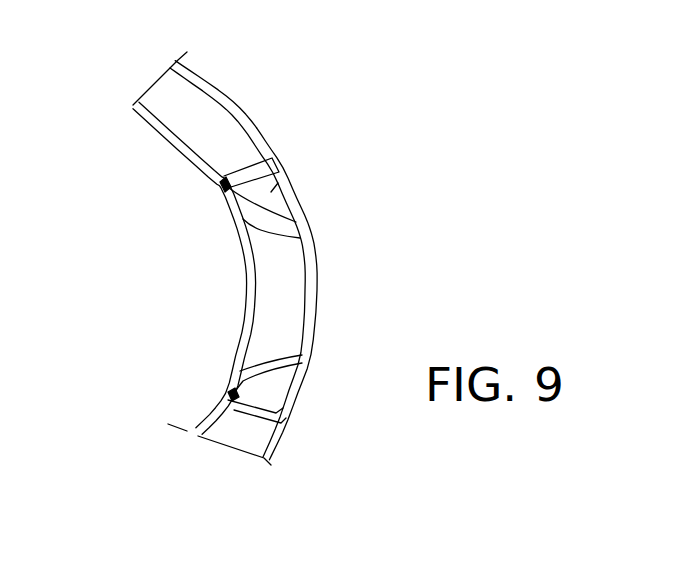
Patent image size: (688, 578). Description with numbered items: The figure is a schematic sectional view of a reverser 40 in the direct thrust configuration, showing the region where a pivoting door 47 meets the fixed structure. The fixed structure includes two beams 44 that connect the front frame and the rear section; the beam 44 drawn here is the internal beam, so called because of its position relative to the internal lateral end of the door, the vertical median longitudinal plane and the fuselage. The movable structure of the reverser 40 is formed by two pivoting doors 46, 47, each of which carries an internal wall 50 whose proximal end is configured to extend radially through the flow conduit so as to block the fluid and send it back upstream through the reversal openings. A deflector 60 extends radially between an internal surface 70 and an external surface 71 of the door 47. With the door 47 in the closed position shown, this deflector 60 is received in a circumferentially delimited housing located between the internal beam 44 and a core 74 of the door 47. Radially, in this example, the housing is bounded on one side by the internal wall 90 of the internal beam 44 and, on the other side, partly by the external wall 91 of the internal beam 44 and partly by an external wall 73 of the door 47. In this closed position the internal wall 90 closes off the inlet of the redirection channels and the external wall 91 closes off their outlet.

The reverser 40 is at (118, 295).
The beam 44 is at (334, 297).
The pivoting door 46 is at (292, 456).
The pivoting door 47 is at (237, 73).
The internal wall 50 is at (142, 119).
The deflector 60 is at (287, 176).
The internal surface 70 is at (176, 148).
The external surface 71 is at (266, 122).
The external wall 73 is at (197, 74).
The core 74 is at (215, 117).
The internal wall 90 is at (222, 194).
The external wall 91 is at (306, 213).